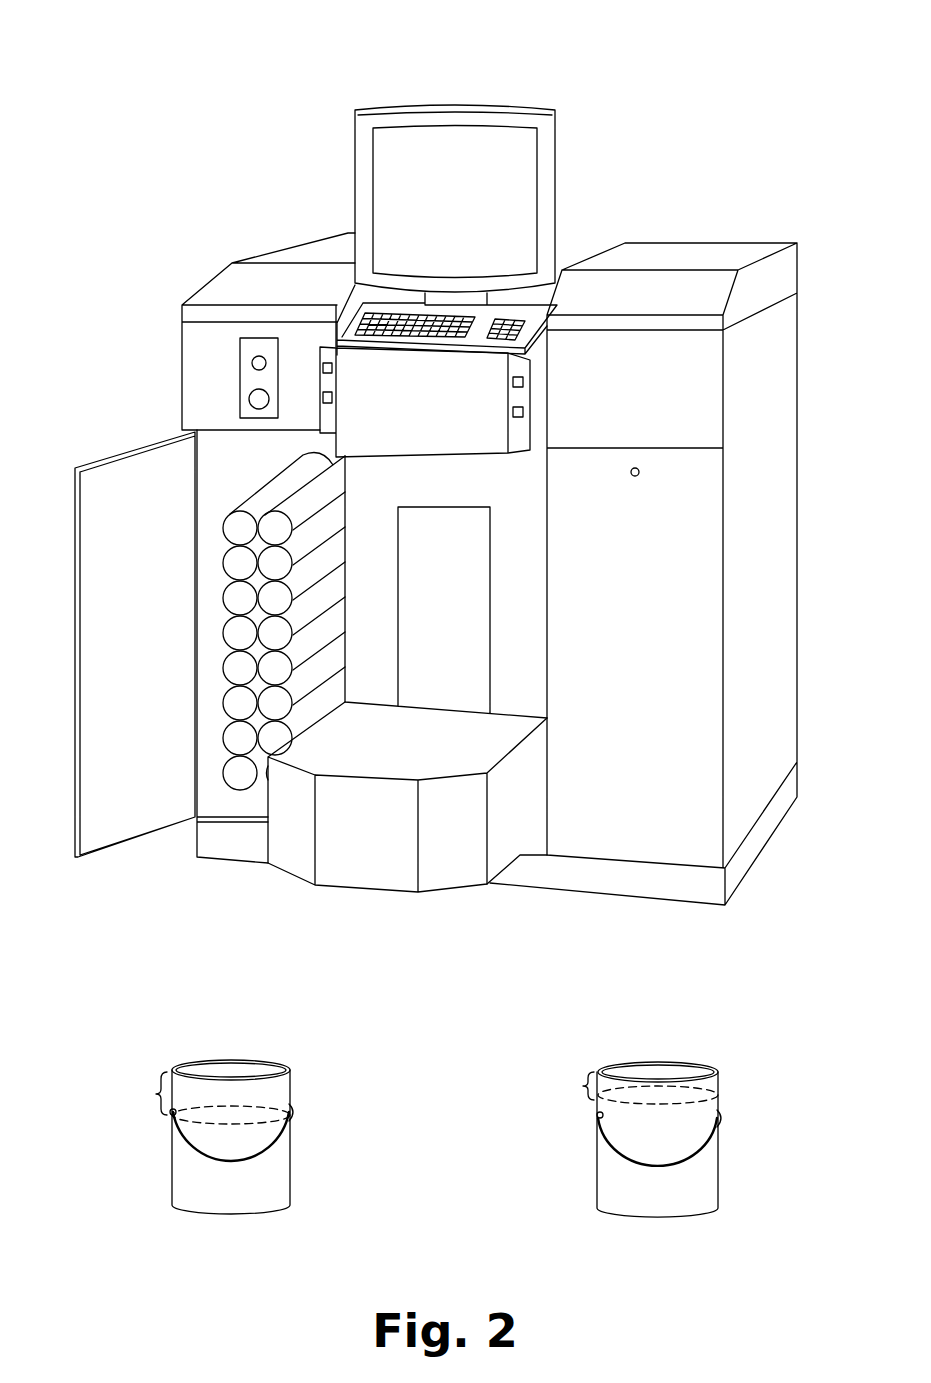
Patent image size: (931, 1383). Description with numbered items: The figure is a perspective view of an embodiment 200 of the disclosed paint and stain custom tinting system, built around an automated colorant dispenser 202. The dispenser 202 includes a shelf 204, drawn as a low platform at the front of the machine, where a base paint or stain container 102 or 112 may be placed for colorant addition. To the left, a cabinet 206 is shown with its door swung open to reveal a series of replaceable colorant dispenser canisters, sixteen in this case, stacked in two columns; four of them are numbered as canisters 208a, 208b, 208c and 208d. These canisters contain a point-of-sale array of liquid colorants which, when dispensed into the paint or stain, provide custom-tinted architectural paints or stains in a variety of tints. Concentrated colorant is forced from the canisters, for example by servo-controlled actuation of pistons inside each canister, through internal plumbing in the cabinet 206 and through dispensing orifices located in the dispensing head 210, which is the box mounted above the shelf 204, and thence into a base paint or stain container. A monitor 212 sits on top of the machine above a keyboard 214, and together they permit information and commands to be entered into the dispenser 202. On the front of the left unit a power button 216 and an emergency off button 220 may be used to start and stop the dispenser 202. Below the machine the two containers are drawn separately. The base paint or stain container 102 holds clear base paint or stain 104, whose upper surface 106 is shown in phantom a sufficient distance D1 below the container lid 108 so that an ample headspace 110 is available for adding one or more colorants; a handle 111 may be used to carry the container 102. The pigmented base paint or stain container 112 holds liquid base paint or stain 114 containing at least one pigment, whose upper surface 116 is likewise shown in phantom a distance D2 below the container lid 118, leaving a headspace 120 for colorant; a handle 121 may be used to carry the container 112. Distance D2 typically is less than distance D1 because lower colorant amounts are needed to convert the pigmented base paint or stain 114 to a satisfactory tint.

The embodiment of the paint and stain custom tinting system 200 is at (466, 454).
The automated colorant dispenser 202 is at (806, 328).
The shelf 204 is at (475, 738).
The cabinet 206 is at (113, 825).
The colorant dispenser canister 208a is at (240, 780).
The colorant dispenser canister 208b is at (238, 742).
The colorant dispenser canister 208c is at (238, 707).
The colorant dispenser canister 208d is at (238, 670).
The dispensing head 210 is at (482, 422).
The monitor 212 is at (513, 200).
The keyboard 214 is at (530, 320).
The power button 216 is at (252, 362).
The emergency off button 220 is at (250, 398).
The base paint or stain container 102 is at (229, 1118).
The clear base paint or stain 104 is at (262, 1152).
The upper surface 106 is at (268, 1125).
The container lid 108 is at (240, 1072).
The headspace 110 is at (270, 1098).
The handle 111 is at (213, 1167).
The distance D1 is at (145, 1093).
The pigmented base paint or stain container 112 is at (661, 1122).
The pigmented base paint or stain 114 is at (687, 1153).
The upper surface 116 is at (697, 1103).
The container lid 118 is at (667, 1075).
The headspace 120 is at (713, 1088).
The handle 121 is at (640, 1170).
The distance D2 is at (571, 1087).